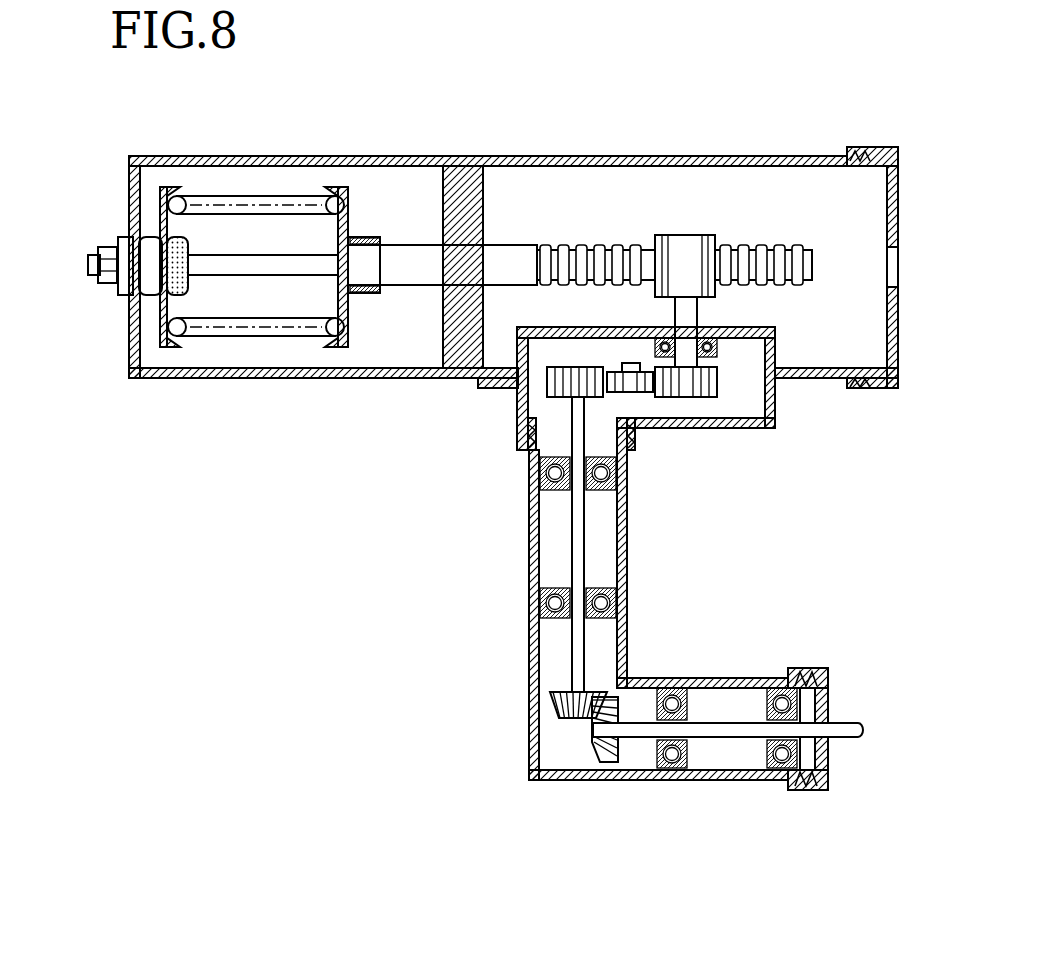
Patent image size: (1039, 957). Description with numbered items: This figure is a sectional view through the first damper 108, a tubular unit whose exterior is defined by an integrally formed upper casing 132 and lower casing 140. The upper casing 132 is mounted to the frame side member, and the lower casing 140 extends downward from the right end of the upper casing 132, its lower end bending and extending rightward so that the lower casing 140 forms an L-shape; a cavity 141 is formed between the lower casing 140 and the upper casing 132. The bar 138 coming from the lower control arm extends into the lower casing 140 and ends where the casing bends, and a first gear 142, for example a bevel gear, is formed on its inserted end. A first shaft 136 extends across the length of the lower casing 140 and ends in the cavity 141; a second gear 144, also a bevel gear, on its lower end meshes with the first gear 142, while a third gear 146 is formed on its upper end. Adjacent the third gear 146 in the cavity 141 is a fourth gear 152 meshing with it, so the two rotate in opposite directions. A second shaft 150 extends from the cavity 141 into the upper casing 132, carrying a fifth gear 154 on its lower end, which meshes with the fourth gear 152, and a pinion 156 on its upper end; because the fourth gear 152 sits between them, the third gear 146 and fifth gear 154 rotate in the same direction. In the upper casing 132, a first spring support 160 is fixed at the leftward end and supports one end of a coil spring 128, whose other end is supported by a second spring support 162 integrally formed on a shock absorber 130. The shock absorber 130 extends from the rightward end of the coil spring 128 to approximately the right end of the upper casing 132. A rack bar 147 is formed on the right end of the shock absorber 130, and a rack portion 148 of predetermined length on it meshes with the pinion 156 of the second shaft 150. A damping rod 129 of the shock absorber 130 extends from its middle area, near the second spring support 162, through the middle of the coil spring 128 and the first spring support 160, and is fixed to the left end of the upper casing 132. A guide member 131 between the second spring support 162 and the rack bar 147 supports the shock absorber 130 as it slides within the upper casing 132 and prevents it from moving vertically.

The first damper 108 is at (551, 219).
The coil spring 128 is at (255, 218).
The damping rod 129 is at (265, 182).
The shock absorber 130 is at (442, 189).
The guide member 131 is at (462, 227).
The upper casing 132 is at (488, 118).
The first shaft 136 is at (629, 544).
The bar 138 is at (728, 780).
The lower casing 140 is at (635, 558).
The cavity 141 is at (862, 418).
The first gear 142 is at (585, 771).
The second gear 144 is at (528, 738).
The third gear 146 is at (517, 424).
The rack bar 147 is at (534, 143).
The rack portion 148 is at (674, 175).
The second shaft 150 is at (816, 322).
The fourth gear 152 is at (676, 435).
The fifth gear 154 is at (766, 443).
The pinion 156 is at (709, 223).
The first spring support 160 is at (131, 333).
The second spring support 162 is at (349, 328).